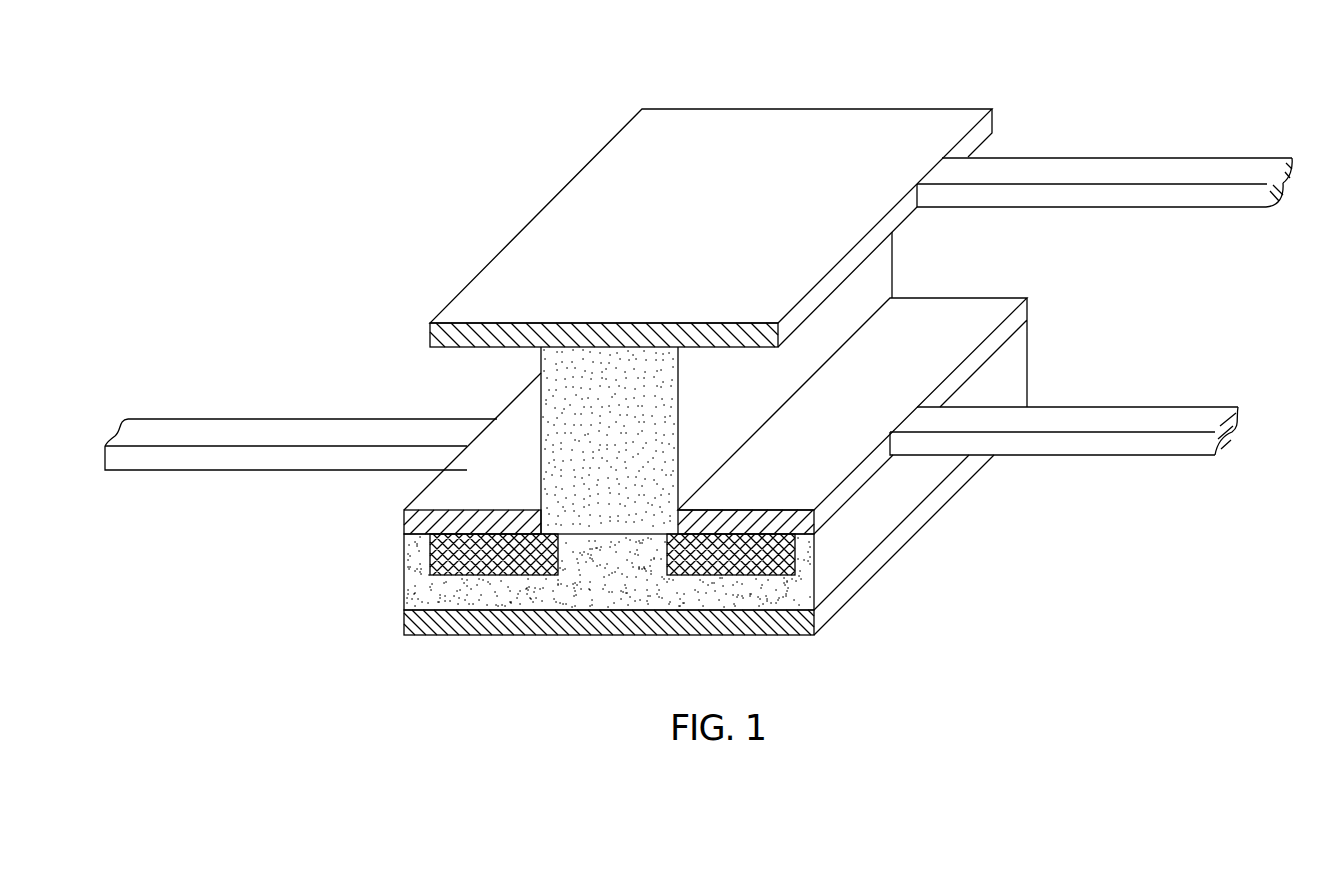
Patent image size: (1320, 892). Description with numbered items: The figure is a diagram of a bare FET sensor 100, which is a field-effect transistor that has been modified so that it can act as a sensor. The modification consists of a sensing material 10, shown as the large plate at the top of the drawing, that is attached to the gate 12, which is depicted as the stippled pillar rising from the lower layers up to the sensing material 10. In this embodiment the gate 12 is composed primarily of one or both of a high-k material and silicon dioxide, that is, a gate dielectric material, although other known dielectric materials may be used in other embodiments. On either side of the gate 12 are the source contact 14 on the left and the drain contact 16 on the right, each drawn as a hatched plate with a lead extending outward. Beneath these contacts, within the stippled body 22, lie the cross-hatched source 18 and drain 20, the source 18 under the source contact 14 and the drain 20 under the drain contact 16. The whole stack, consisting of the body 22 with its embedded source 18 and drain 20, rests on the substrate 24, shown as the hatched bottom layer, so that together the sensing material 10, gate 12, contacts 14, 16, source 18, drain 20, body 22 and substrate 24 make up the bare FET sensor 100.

The bare FET sensor 100 is at (376, 126).
The sensing material 10 is at (927, 123).
The gate 12 is at (562, 401).
The source contact 14 is at (455, 493).
The drain contact 16 is at (948, 328).
The source 18 is at (455, 562).
The drain 20 is at (795, 547).
The body 22 is at (610, 583).
The substrate 24 is at (720, 623).